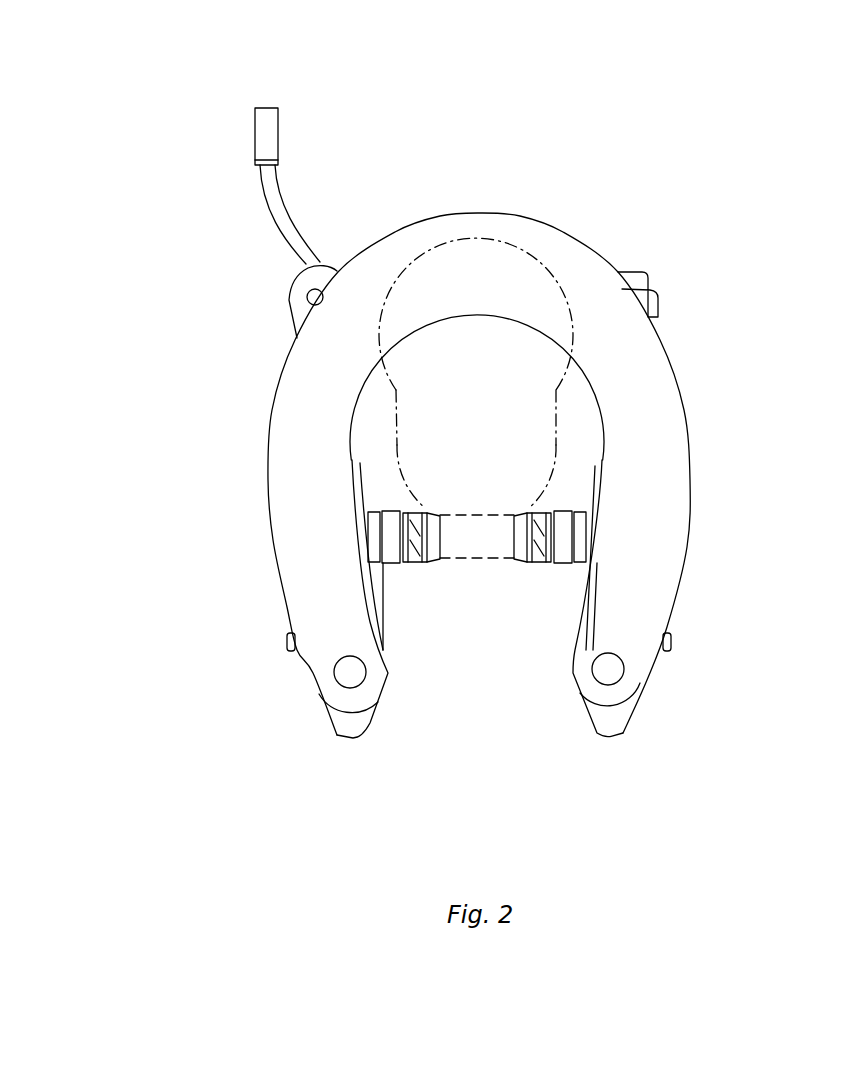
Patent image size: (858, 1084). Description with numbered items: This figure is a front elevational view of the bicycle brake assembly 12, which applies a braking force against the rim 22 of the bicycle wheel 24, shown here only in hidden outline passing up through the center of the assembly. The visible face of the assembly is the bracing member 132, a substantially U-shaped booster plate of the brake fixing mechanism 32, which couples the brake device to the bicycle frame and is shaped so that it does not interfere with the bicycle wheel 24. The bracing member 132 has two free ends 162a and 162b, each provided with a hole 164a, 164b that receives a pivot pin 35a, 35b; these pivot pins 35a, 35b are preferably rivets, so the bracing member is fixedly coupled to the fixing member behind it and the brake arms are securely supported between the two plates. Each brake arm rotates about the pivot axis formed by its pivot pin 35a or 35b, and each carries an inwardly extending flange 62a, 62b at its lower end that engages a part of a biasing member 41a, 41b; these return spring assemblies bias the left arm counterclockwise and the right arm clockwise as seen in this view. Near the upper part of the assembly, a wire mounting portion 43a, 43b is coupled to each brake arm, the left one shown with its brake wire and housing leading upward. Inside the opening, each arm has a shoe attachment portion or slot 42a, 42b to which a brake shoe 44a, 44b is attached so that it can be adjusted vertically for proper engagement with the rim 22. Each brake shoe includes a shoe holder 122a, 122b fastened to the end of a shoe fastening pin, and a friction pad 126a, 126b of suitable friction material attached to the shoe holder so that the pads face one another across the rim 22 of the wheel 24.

The bicycle brake assembly 12 is at (666, 199).
The bracing member 132 is at (527, 235).
The wire mounting portion 43a is at (297, 272).
The wire mounting portion 43b is at (651, 289).
The brake fixing mechanism 32 is at (676, 305).
The bicycle wheel 24 is at (557, 401).
The rim 22 is at (478, 560).
The friction pad 126a is at (437, 510).
The friction pad 126b is at (517, 510).
The shoe holder 122a is at (383, 562).
The shoe holder 122b is at (566, 511).
The brake shoe 44a is at (412, 562).
The brake shoe 44b is at (537, 562).
The shoe attachment portion 42a is at (384, 603).
The shoe attachment portion 42b is at (585, 560).
The biasing member 41a is at (392, 690).
The biasing member 41b is at (573, 687).
The pivot pin 35a is at (337, 675).
The pivot pin 35b is at (625, 675).
The hole 164a is at (352, 655).
The hole 164b is at (600, 653).
The free end 162a is at (277, 567).
The free end 162b is at (687, 548).
The inwardly extending flange 62a is at (297, 653).
The inwardly extending flange 62b is at (668, 648).